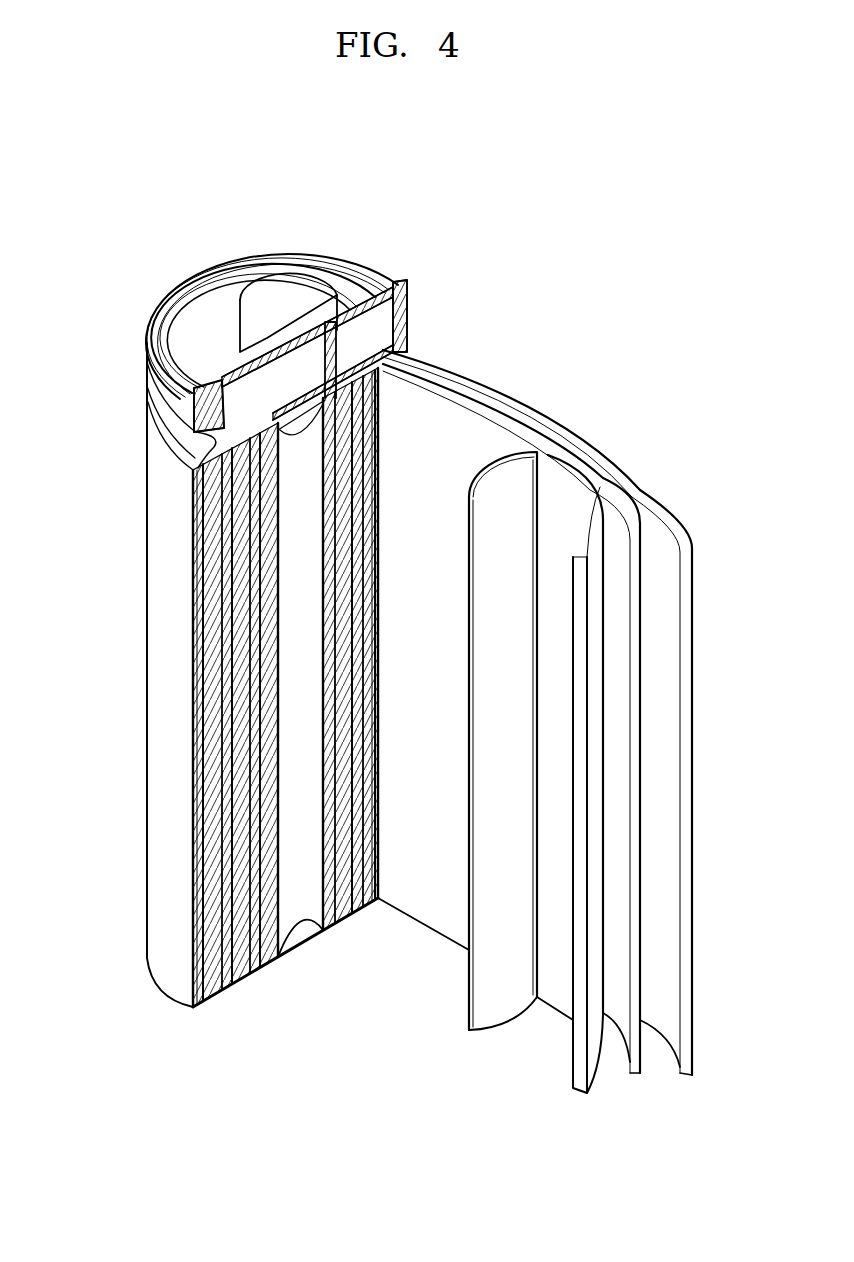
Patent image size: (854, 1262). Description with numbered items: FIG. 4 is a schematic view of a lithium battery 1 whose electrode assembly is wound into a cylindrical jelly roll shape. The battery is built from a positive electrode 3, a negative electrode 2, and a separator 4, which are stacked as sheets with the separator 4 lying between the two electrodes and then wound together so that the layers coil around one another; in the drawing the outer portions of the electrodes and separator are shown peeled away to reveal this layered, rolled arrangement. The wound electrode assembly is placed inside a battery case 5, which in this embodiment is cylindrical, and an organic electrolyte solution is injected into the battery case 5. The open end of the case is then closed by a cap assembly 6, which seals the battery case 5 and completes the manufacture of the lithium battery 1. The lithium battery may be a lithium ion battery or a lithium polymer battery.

The lithium battery 1 is at (504, 280).
The negative electrode 2 is at (678, 523).
The positive electrode 3 is at (558, 472).
The separator 4 is at (478, 418).
The battery case 5 is at (160, 675).
The cap assembly 6 is at (275, 297).